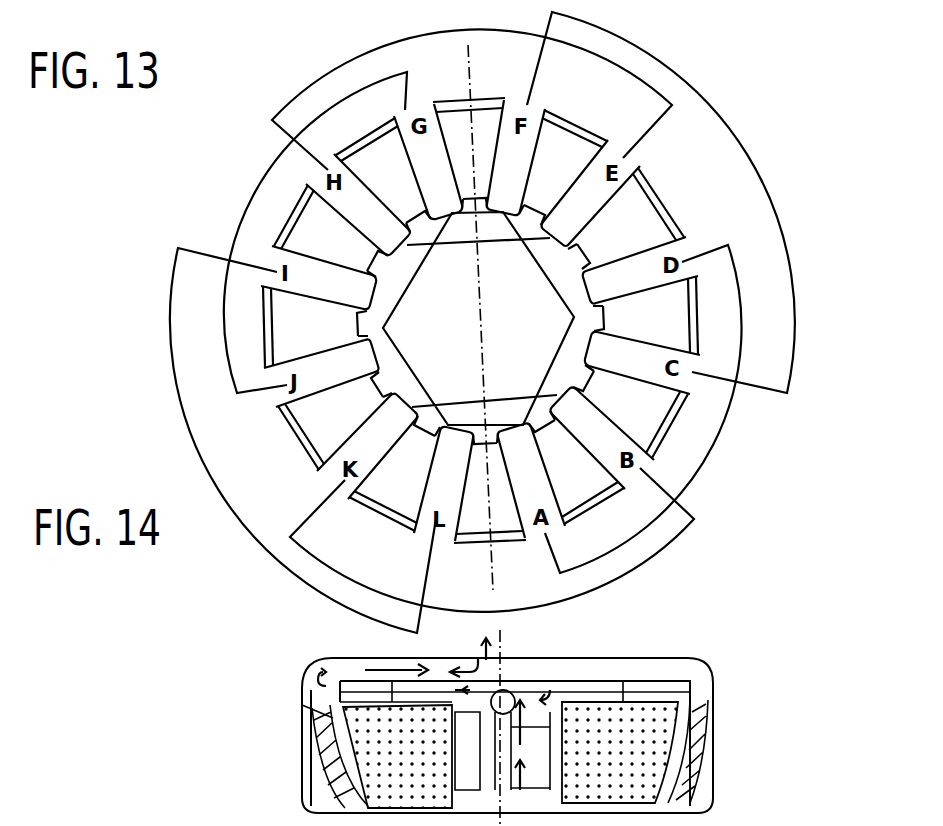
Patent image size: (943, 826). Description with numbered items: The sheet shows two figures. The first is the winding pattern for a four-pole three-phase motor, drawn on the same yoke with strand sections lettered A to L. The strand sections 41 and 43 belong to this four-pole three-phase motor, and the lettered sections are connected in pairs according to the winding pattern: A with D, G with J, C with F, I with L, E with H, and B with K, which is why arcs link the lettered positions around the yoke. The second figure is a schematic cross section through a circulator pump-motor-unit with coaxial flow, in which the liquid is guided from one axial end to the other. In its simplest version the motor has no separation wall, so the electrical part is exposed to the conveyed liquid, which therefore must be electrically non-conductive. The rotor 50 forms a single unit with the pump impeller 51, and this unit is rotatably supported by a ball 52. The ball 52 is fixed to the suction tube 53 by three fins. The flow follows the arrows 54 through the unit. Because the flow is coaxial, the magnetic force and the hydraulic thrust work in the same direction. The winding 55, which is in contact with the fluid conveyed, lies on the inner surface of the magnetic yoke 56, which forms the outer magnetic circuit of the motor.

In FIG. 13, the strand section 41 is at (335, 287).
In FIG. 13, the strand section 43 is at (347, 363).
In FIG. 14, the rotor 50 is at (373, 737).
In FIG. 14, the pump impeller 51 is at (357, 662).
In FIG. 14, the ball 52 is at (307, 713).
In FIG. 14, the suction tube 53 is at (310, 825).
In FIG. 14, the arrows 54 is at (330, 778).
In FIG. 14, the winding 55 is at (307, 728).
In FIG. 14, the magnetic yoke 56 is at (307, 683).